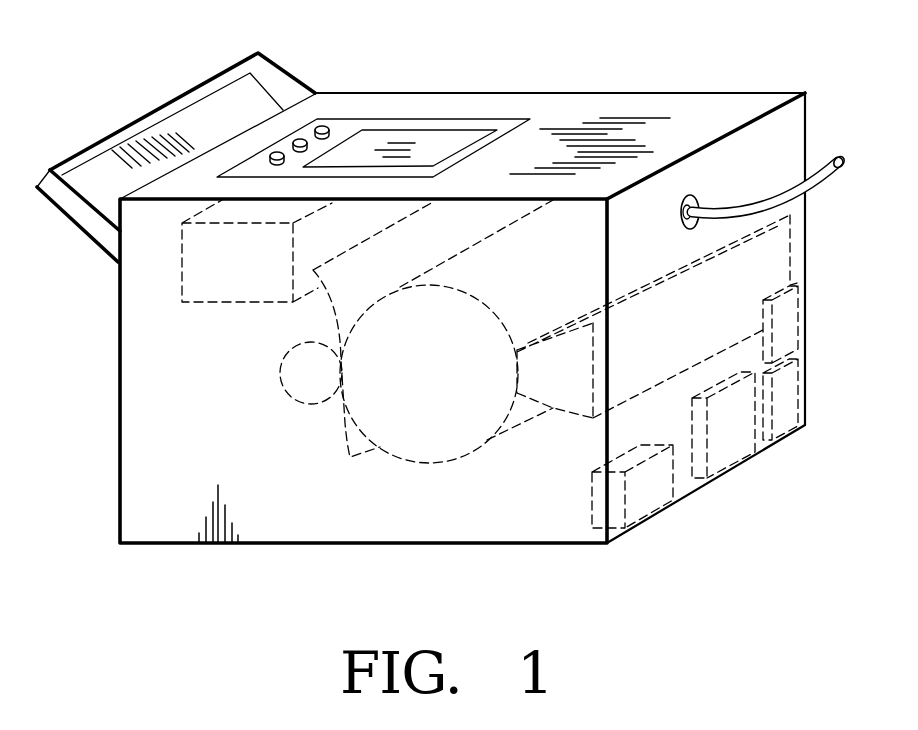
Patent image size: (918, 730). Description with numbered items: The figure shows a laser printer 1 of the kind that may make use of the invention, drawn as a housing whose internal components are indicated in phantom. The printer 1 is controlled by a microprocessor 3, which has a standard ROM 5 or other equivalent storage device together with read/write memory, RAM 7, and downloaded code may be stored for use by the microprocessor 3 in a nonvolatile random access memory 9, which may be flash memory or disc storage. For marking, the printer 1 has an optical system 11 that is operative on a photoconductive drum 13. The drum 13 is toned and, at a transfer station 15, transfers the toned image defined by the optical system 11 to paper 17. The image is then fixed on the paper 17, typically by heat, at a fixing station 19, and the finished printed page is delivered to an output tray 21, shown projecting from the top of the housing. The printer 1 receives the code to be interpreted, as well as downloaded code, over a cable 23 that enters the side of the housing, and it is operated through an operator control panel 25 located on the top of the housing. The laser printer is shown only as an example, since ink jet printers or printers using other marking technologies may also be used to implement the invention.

The printer 1 is at (143, 613).
The microprocessor 3 is at (732, 438).
The ROM 5 is at (785, 403).
The RAM 7 is at (784, 330).
The nonvolatile random access memory 9 is at (645, 498).
The optical system 11 is at (768, 258).
The photoconductive drum 13 is at (445, 463).
The transfer station 15 is at (273, 383).
The paper 17 is at (345, 440).
The fixing station 19 is at (182, 265).
The output tray 21 is at (47, 177).
The cable 23 is at (826, 163).
The operator control panel 25 is at (316, 92).